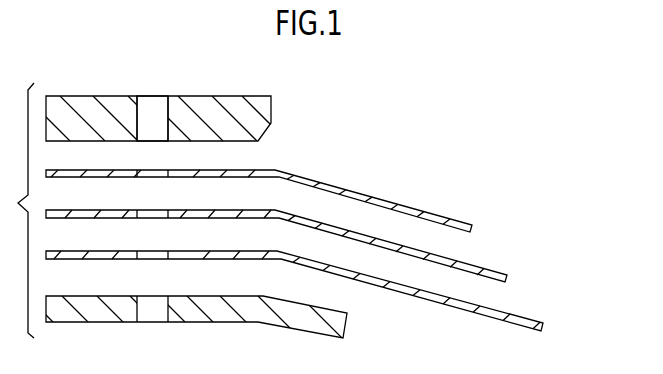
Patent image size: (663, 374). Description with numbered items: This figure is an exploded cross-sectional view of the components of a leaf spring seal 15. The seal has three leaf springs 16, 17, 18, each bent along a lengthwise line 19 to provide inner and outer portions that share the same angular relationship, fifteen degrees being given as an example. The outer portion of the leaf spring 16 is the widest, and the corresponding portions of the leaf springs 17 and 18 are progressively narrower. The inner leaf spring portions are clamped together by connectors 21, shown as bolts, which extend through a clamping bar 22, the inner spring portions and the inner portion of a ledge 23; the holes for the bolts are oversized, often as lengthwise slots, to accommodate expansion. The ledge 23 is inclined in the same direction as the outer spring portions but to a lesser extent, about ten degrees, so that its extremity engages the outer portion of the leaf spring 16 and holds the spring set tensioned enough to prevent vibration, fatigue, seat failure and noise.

The leaf spring seal 15 is at (90, 92).
The leaf spring 16 is at (552, 320).
The leaf spring 17 is at (507, 279).
The leaf spring 18 is at (472, 227).
The lengthwise line 19 is at (276, 208).
The connectors 21 is at (153, 106).
The clamping bar 22 is at (272, 112).
The ledge 23 is at (347, 317).